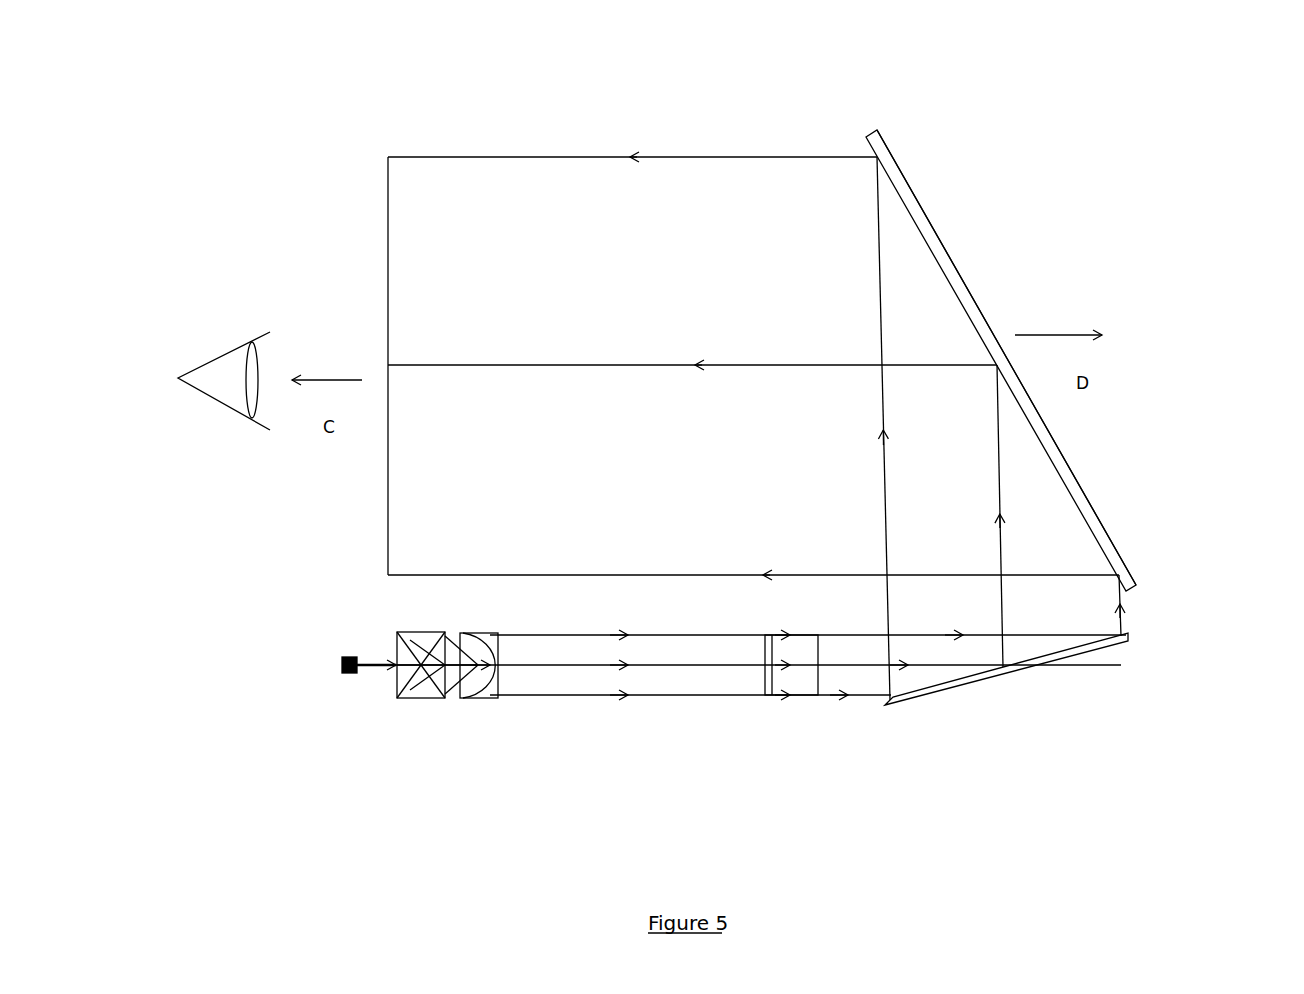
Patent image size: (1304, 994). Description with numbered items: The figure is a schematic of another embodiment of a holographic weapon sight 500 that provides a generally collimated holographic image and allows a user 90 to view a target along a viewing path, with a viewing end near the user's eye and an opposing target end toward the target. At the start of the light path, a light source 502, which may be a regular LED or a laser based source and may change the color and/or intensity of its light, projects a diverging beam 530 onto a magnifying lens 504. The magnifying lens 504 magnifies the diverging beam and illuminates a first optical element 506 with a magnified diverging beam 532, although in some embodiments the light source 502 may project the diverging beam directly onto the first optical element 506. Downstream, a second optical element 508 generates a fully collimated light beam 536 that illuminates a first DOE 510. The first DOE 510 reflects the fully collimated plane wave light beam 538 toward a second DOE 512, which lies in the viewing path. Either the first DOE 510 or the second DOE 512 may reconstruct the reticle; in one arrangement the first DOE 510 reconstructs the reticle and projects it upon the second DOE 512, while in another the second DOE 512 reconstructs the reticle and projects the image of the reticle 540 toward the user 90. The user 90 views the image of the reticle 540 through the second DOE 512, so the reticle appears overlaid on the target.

The user 90 is at (215, 338).
The holographic weapon sight 500 is at (995, 190).
The light source 502 is at (340, 692).
The magnifying lens 504 is at (418, 710).
The first optical element 506 is at (490, 710).
The second optical element 508 is at (795, 705).
The first DOE 510 is at (1032, 693).
The second DOE 512 is at (1118, 478).
The diverging beam 530 is at (370, 692).
The magnified diverging beam 532 is at (447, 702).
The fully collimated light beam 536 is at (843, 705).
The fully collimated plane wave light beam 538 is at (1153, 614).
The image of the reticle 540 is at (592, 192).